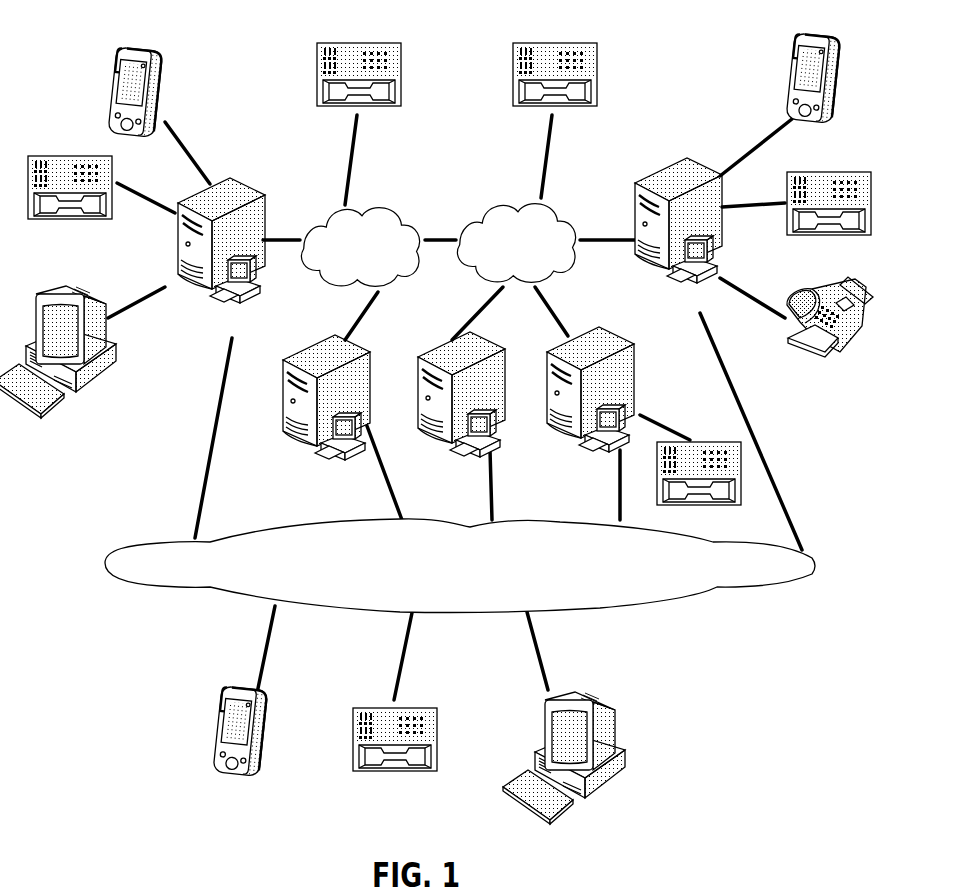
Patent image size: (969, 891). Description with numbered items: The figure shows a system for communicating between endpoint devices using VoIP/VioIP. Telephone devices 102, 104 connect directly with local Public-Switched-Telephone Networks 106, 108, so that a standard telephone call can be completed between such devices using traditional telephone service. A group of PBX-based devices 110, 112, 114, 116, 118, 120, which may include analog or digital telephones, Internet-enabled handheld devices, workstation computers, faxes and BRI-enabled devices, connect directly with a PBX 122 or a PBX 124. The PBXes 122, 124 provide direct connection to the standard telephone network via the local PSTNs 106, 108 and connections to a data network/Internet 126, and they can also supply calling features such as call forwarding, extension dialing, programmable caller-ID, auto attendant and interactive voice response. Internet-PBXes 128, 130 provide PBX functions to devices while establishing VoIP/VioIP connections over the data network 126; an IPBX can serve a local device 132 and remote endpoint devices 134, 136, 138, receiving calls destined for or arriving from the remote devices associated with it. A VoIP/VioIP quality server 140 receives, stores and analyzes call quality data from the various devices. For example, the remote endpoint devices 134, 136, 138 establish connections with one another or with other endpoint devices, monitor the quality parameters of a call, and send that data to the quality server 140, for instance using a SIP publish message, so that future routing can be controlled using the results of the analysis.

The telephone device 102 is at (369, 44).
The telephone device 104 is at (578, 44).
The local Public-Switched-Telephone Network (PSTN) 106 is at (383, 200).
The local Public-Switched-Telephone Network (PSTN) 108 is at (553, 210).
The PBX-based device 110 is at (153, 60).
The PBX-based device 112 is at (103, 178).
The PBX-based device 114 is at (98, 296).
The PBX-based device 116 is at (832, 47).
The PBX-based device 118 is at (828, 175).
The PBX-based device 120 is at (869, 321).
The Private Branch Exchange (PBX) 122 is at (245, 180).
The Private Branch Exchange (PBX) 124 is at (683, 165).
The data network/Internet 126 is at (816, 562).
The Internet-PBX (IPBX) 128 is at (483, 345).
The Internet-PBX (IPBX) 130 is at (611, 335).
The local device 132 is at (696, 442).
The remote endpoint device 134 is at (262, 714).
The remote endpoint device 136 is at (410, 708).
The remote endpoint device 138 is at (583, 698).
The VoIP/VioIP quality server 140 is at (358, 352).